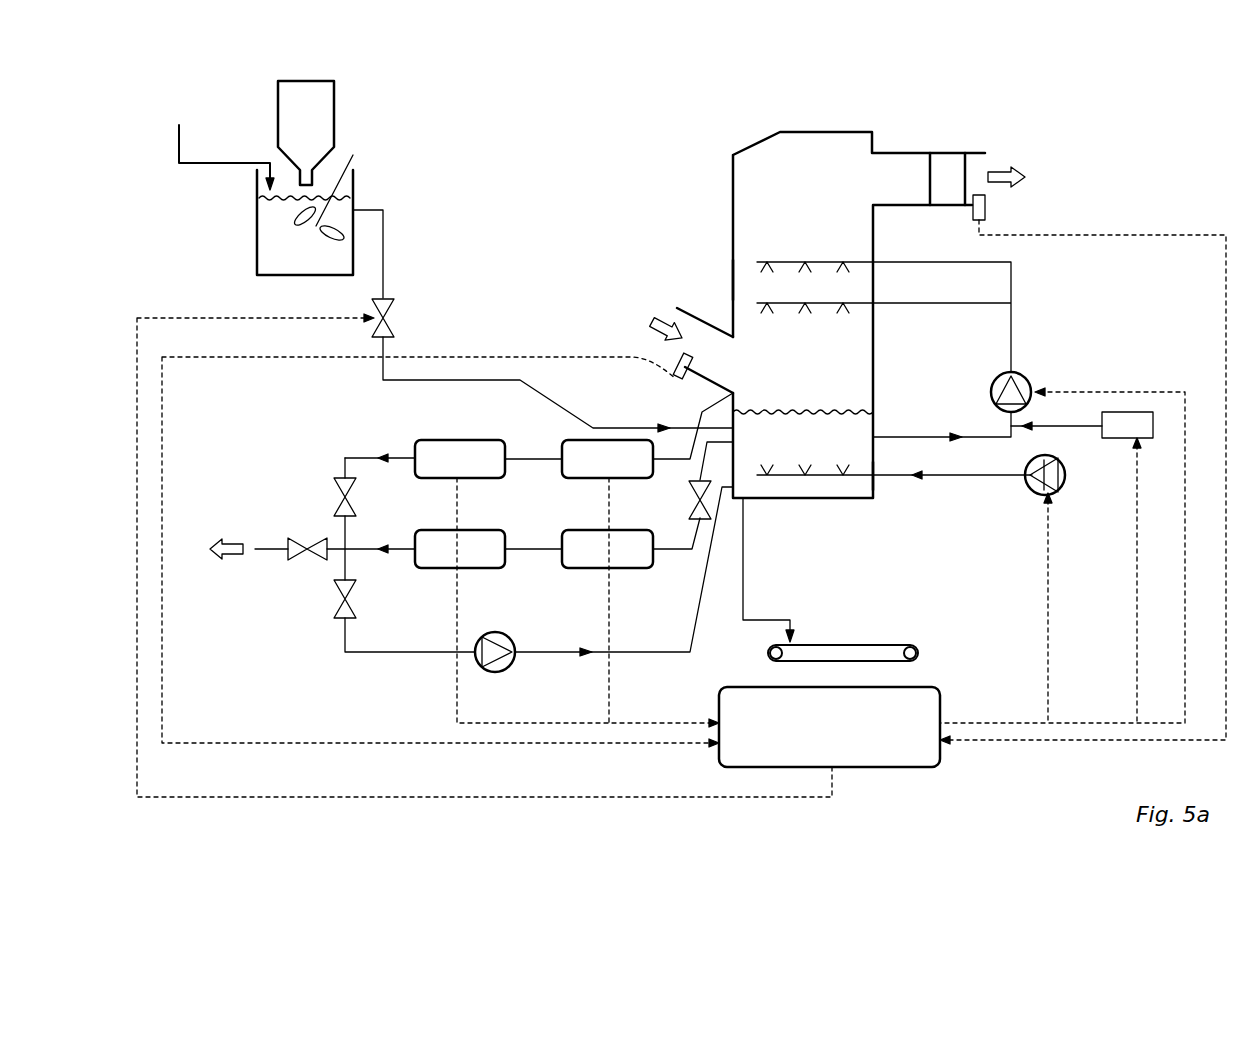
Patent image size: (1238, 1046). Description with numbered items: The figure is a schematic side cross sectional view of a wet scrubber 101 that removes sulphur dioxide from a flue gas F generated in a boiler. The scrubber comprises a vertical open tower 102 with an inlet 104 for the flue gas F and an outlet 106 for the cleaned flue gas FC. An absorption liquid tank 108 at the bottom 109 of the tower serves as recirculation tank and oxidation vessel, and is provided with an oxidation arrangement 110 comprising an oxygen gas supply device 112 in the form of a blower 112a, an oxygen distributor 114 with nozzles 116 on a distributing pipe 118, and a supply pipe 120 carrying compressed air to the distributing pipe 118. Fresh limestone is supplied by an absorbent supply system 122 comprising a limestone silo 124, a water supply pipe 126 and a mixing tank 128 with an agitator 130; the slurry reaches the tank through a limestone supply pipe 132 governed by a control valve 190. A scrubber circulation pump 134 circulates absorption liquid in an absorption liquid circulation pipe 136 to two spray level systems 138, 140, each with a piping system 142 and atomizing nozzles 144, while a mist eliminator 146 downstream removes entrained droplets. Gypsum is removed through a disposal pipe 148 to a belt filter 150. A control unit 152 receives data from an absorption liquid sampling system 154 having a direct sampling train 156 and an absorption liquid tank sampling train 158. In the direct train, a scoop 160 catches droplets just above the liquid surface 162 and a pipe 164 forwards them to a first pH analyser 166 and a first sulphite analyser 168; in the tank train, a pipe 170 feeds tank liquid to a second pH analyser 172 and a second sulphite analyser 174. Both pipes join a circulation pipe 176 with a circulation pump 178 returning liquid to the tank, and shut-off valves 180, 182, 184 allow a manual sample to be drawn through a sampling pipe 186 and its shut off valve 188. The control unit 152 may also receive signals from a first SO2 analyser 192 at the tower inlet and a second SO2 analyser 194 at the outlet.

The wet scrubber 101 is at (680, 156).
The vertical open tower 102 is at (733, 290).
The inlet 104 is at (695, 318).
The outlet 106 is at (978, 155).
The absorption liquid tank 108 is at (865, 500).
The bottom 109 is at (877, 482).
The oxidation arrangement 110 is at (945, 482).
The oxygen gas supply device 112 is at (1060, 490).
The blower 112a is at (1052, 495).
The oxygen distributor 114 is at (785, 478).
The nozzles 116 is at (815, 478).
The distributing pipe 118 is at (835, 478).
The supply pipe 120 is at (1022, 486).
The absorbent supply system 122 is at (372, 163).
The limestone silo 124 is at (334, 103).
The water supply pipe 126 is at (212, 160).
The mixing tank 128 is at (257, 243).
The agitator 130 is at (316, 230).
The limestone supply pipe 132 is at (383, 235).
The scrubber circulation pump 134 is at (1022, 372).
The absorption liquid circulation pipe 136 is at (1012, 325).
The spray level system 138 is at (842, 255).
The spray level system 140 is at (820, 297).
The piping system 142 is at (898, 262).
The atomizing nozzles 144 is at (757, 268).
The mist eliminator 146 is at (940, 158).
The disposal pipe 148 is at (740, 615).
The belt filter 150 is at (872, 645).
The control unit 152 is at (892, 768).
The absorption liquid sampling system 154 is at (312, 657).
The direct sampling train 156 is at (335, 466).
The absorption liquid tank sampling train 158 is at (362, 551).
The scoop 160 is at (722, 388).
The surface 162 is at (865, 412).
The pipe 164 is at (357, 456).
The first pH analyser 166 is at (585, 478).
The first sulphite analyser 168 is at (440, 440).
The pipe 170 is at (690, 552).
The second pH analyser 172 is at (590, 568).
The second sulphite analyser 174 is at (438, 568).
The circulation pipe 176 is at (370, 655).
The circulation pump 178 is at (485, 668).
The shut-off valve 180 is at (335, 490).
The shut-off valve 182 is at (693, 508).
The shut-off valve 184 is at (335, 605).
The sampling pipe 186 is at (268, 549).
The shut off valve 188 is at (290, 556).
The control valve 190 is at (390, 306).
The first SO2 analyser 192 is at (702, 370).
The second SO2 analyser 194 is at (985, 205).
The flue gas F is at (650, 332).
The cleaned flue gas FC is at (1015, 168).